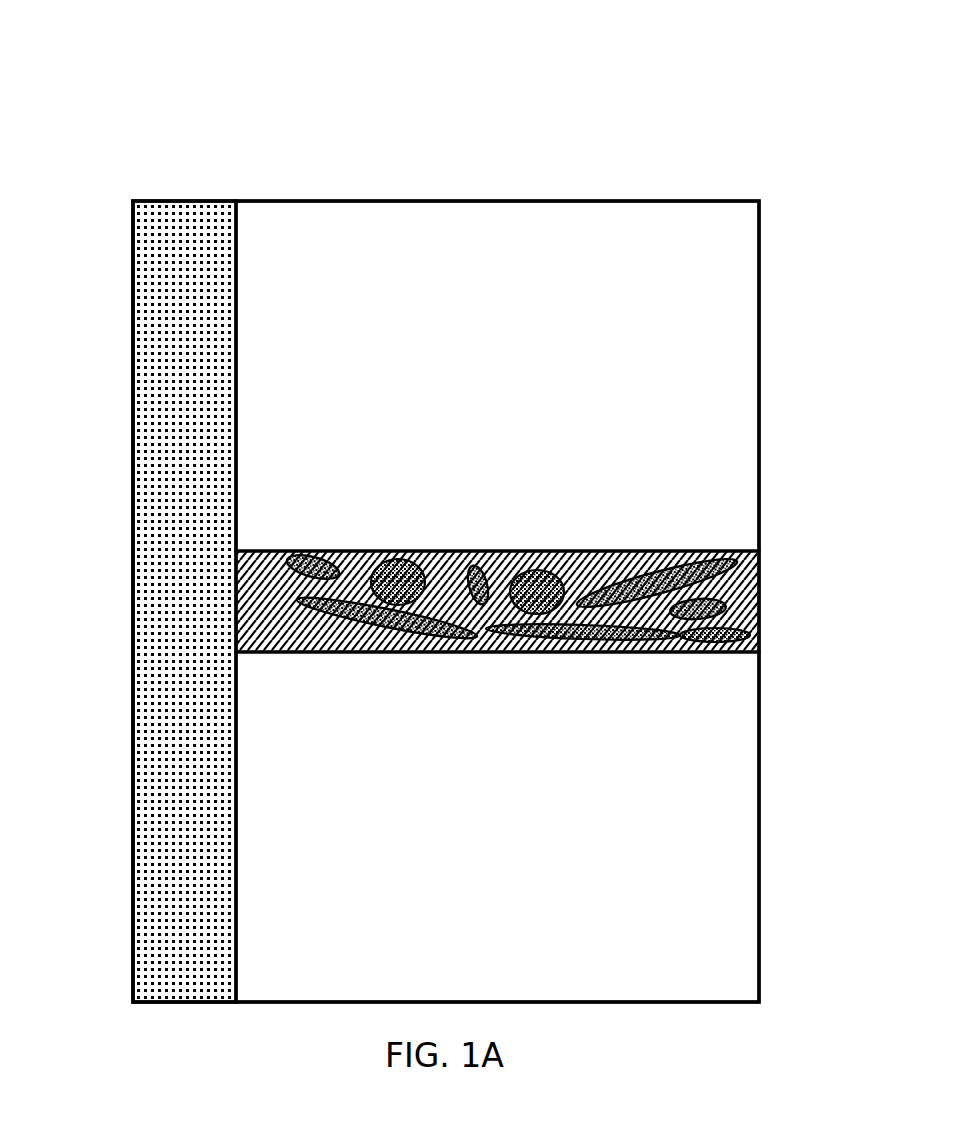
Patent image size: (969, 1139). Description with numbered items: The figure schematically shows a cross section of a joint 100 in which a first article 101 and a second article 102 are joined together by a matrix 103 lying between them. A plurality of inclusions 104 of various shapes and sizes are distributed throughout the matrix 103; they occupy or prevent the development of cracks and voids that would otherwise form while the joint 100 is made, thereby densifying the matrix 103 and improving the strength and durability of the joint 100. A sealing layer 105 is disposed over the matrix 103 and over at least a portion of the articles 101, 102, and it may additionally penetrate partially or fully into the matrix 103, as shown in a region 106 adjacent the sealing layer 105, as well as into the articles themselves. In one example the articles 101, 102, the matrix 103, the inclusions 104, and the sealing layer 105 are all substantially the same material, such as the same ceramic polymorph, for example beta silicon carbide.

The joint 100 is at (694, 99).
The first article 101 is at (742, 365).
The second article 102 is at (745, 688).
The matrix 103 is at (745, 580).
The inclusions 104 is at (643, 587).
The sealing layer 105 is at (167, 427).
The region 106 is at (243, 588).